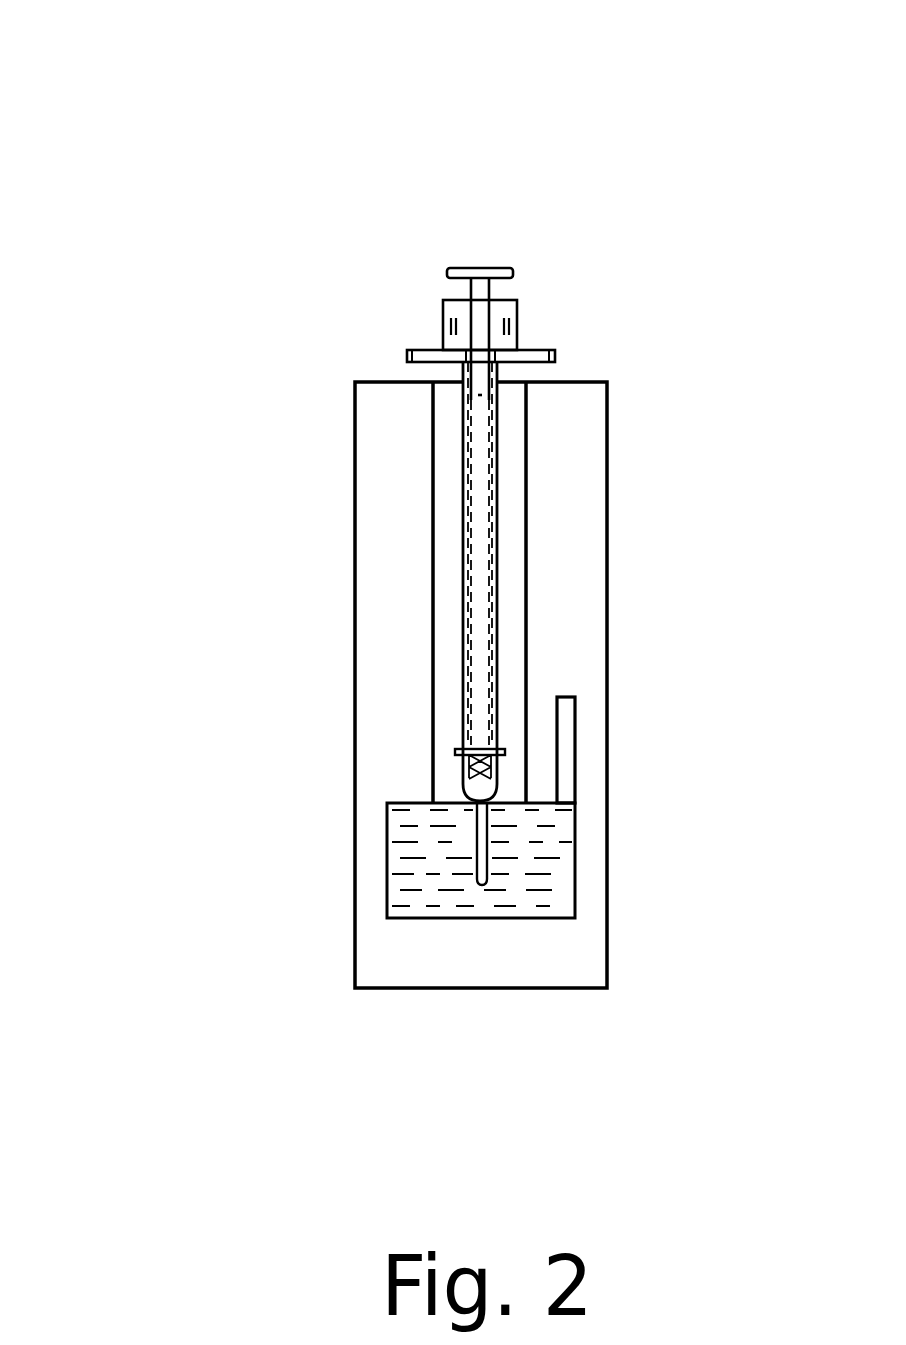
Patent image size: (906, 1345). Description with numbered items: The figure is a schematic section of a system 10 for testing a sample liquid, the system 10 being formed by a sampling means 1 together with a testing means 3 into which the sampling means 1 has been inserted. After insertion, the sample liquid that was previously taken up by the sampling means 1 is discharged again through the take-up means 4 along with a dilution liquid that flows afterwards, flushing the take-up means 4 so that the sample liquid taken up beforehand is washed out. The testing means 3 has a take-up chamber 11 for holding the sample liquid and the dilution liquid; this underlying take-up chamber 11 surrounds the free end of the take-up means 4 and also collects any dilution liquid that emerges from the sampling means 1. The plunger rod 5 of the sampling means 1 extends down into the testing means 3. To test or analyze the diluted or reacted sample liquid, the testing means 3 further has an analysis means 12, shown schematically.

The system 10 is at (293, 330).
The sampling means 1 is at (536, 327).
The testing means 3 is at (607, 522).
The plunger rod 5 is at (495, 605).
The analysis means 12 is at (567, 755).
The take-up chamber 11 is at (572, 850).
The take-up means 4 is at (462, 871).